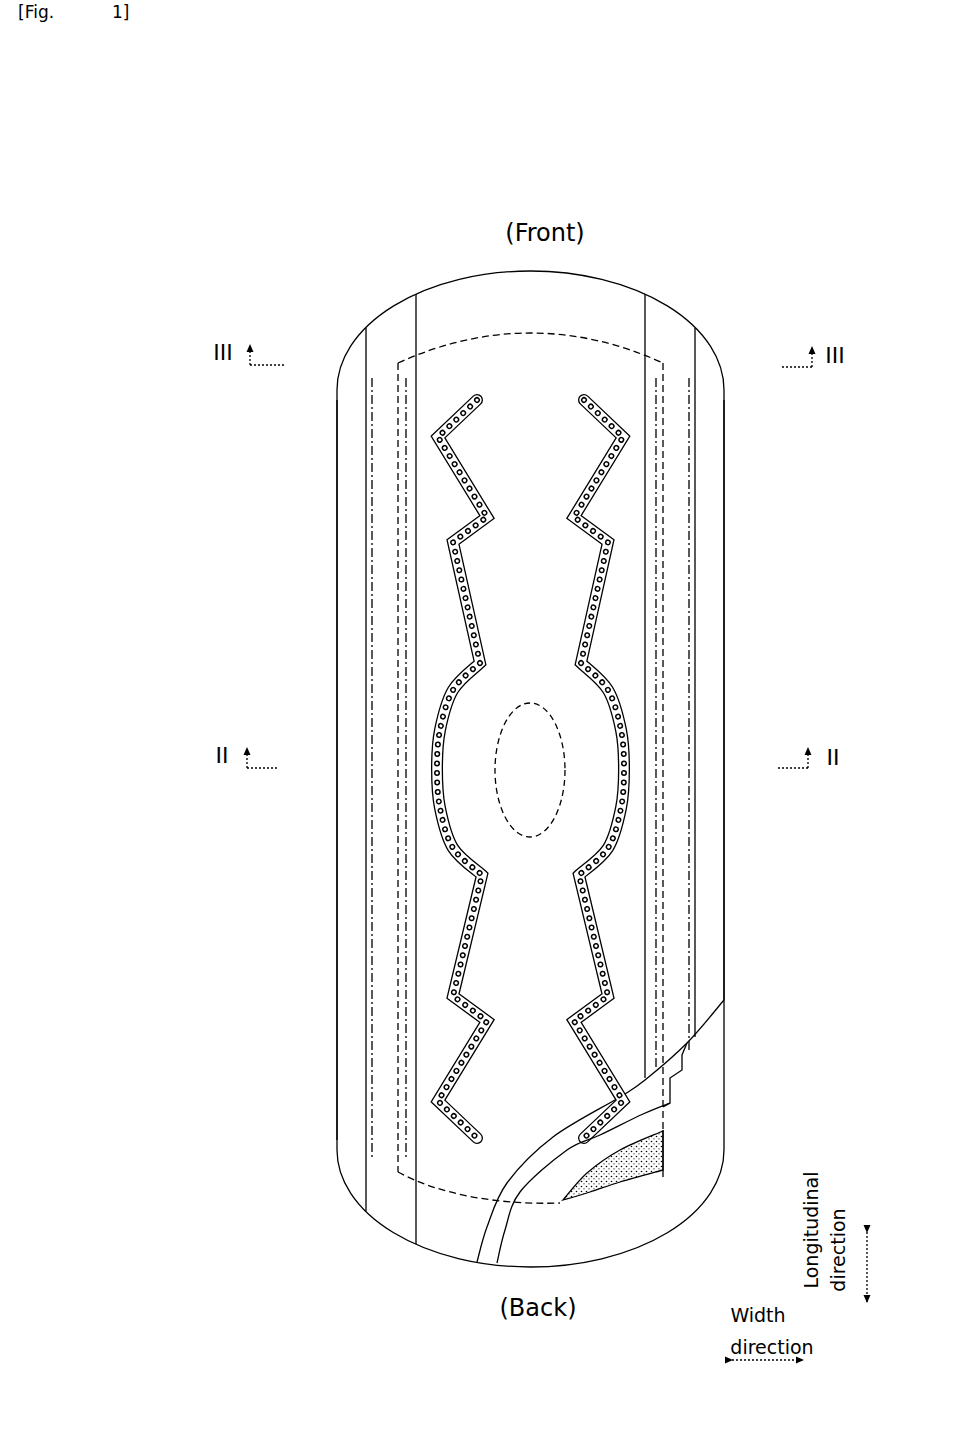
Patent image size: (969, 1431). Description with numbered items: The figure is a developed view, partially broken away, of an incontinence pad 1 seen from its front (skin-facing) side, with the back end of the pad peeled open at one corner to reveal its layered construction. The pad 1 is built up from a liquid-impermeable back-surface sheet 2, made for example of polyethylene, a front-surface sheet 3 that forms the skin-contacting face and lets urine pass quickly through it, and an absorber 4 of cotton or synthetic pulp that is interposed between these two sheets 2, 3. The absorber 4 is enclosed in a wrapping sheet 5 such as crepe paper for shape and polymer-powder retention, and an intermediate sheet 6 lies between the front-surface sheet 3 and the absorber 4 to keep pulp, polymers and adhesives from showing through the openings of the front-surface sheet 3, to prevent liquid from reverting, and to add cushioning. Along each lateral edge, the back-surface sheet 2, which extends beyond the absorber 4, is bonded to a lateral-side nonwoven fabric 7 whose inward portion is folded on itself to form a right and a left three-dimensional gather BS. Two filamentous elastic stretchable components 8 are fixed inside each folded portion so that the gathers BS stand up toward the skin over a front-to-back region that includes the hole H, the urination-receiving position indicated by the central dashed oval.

The incontinence pad 1 is at (718, 288).
The liquid-impermeable back-surface sheet 2 is at (620, 1232).
The front-surface sheet 3 is at (443, 1218).
The absorber 4 is at (635, 1177).
The wrapping sheet 5 is at (550, 1193).
The intermediate sheet 6 is at (645, 1108).
The lateral-side nonwoven fabric 7 is at (352, 910).
The filamentous elastic stretchable component 8 is at (368, 748).
The hole H is at (530, 837).
The three-dimensional gather BS is at (357, 672).